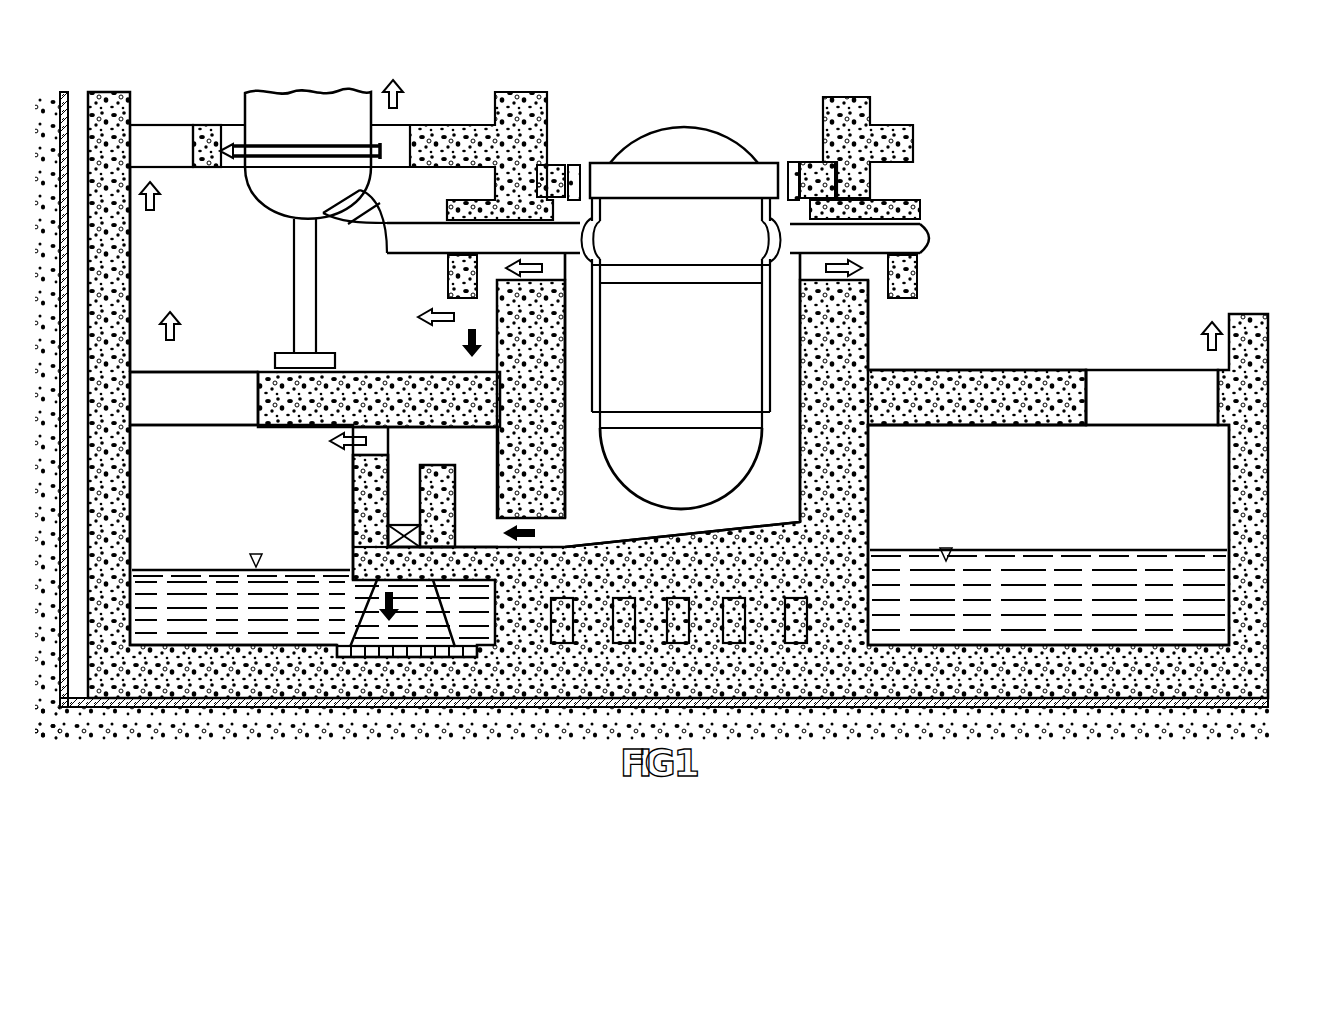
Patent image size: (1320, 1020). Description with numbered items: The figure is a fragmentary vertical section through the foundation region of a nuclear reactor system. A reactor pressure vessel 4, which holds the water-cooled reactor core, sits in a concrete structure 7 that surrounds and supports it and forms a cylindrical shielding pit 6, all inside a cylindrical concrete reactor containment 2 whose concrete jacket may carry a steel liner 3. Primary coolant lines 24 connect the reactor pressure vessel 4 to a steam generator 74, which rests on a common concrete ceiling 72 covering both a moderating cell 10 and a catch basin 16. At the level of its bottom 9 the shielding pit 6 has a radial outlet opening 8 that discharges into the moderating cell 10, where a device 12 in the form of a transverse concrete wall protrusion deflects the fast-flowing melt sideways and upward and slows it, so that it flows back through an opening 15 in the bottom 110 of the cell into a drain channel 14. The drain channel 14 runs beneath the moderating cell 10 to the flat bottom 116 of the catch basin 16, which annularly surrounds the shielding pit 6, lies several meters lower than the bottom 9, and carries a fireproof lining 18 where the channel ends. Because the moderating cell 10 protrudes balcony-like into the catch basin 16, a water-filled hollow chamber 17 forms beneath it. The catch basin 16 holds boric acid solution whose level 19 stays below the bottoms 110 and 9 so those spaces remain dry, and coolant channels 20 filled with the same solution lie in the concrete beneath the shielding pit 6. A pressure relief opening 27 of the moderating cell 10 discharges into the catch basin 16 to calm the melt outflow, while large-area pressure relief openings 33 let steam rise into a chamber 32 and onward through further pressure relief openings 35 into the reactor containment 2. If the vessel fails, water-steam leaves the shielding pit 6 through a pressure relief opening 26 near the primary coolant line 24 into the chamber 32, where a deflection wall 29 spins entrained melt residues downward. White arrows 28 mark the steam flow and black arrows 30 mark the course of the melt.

The reactor containment 2 is at (54, 102).
The steel liner 3 is at (70, 100).
The reactor pressure vessel 4 is at (672, 358).
The shielding pit 6 is at (775, 482).
The concrete structure 7 is at (838, 336).
The outlet opening 8 is at (560, 532).
The bottom of the shielding pit 9 is at (612, 548).
The moderating cell 10 is at (448, 440).
The device for deflecting and slowing down a melt 12 is at (452, 470).
The drain channel 14 is at (380, 637).
The opening 15 is at (402, 524).
The catch basin 16 is at (222, 432).
The hollow chamber 17 is at (472, 612).
The fireproof lining 18 is at (355, 632).
The level of the water supply 19 is at (256, 554).
The coolant channels 20 is at (680, 625).
The primary coolant lines 24 is at (418, 232).
The pressure relief opening 26 is at (560, 262).
The pressure relief opening 27 is at (384, 438).
The white arrows 28 is at (160, 200).
The deflection wall 29 is at (446, 280).
The black arrows 30 is at (466, 342).
The chamber 32 is at (347, 343).
The pressure relief openings 33 is at (185, 428).
The pressure relief openings 35 is at (236, 130).
The concrete ceiling 72 is at (270, 430).
The steam generator 74 is at (300, 110).
The bottom of the moderating cell 110 is at (515, 505).
The bottom of the catch basin 116 is at (195, 640).